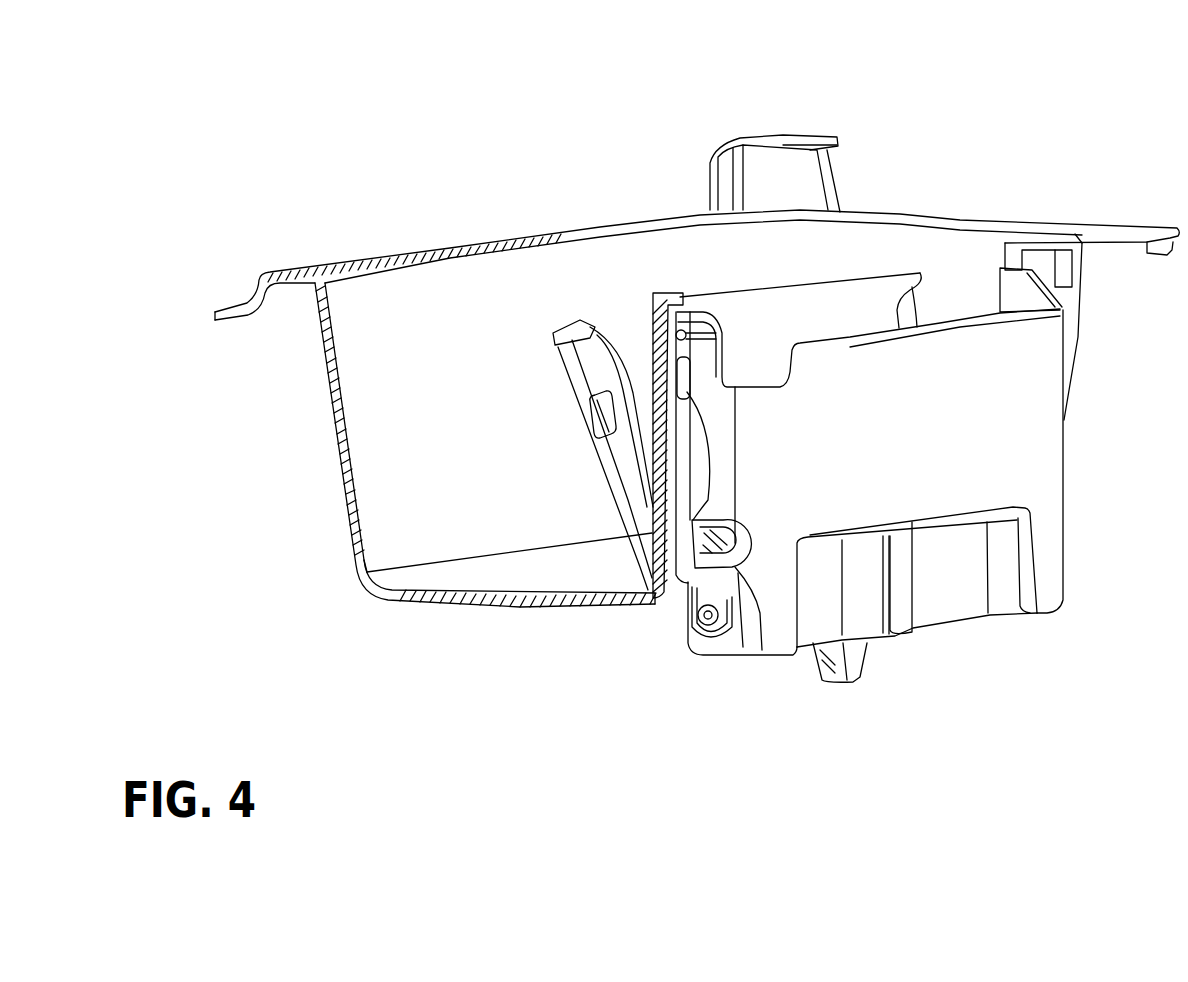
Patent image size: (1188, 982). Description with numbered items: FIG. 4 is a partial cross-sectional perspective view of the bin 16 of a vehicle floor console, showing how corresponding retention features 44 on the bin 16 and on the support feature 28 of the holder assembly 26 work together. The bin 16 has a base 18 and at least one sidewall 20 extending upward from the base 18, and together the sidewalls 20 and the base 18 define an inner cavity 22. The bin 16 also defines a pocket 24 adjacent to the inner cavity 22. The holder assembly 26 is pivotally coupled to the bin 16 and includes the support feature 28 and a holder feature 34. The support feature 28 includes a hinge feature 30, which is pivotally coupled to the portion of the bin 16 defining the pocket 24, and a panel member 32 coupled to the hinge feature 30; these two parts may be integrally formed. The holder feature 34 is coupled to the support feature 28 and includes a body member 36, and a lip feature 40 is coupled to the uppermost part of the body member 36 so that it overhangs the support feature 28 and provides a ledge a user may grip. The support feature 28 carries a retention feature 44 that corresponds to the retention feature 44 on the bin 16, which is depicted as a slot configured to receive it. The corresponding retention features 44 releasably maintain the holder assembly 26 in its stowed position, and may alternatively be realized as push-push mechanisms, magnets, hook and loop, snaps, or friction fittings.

The bin 16 is at (330, 444).
The base 18 is at (594, 580).
The sidewall 20 is at (466, 460).
The inner cavity 22 is at (435, 383).
The pocket 24 is at (982, 308).
The holder assembly 26 is at (575, 412).
The support feature 28 is at (585, 352).
The hinge feature 30 is at (710, 630).
The panel member 32 is at (590, 373).
The holder feature 34 is at (855, 305).
The body member 36 is at (817, 325).
The lip feature 40 is at (572, 331).
The retention feature 44 is at (600, 416).